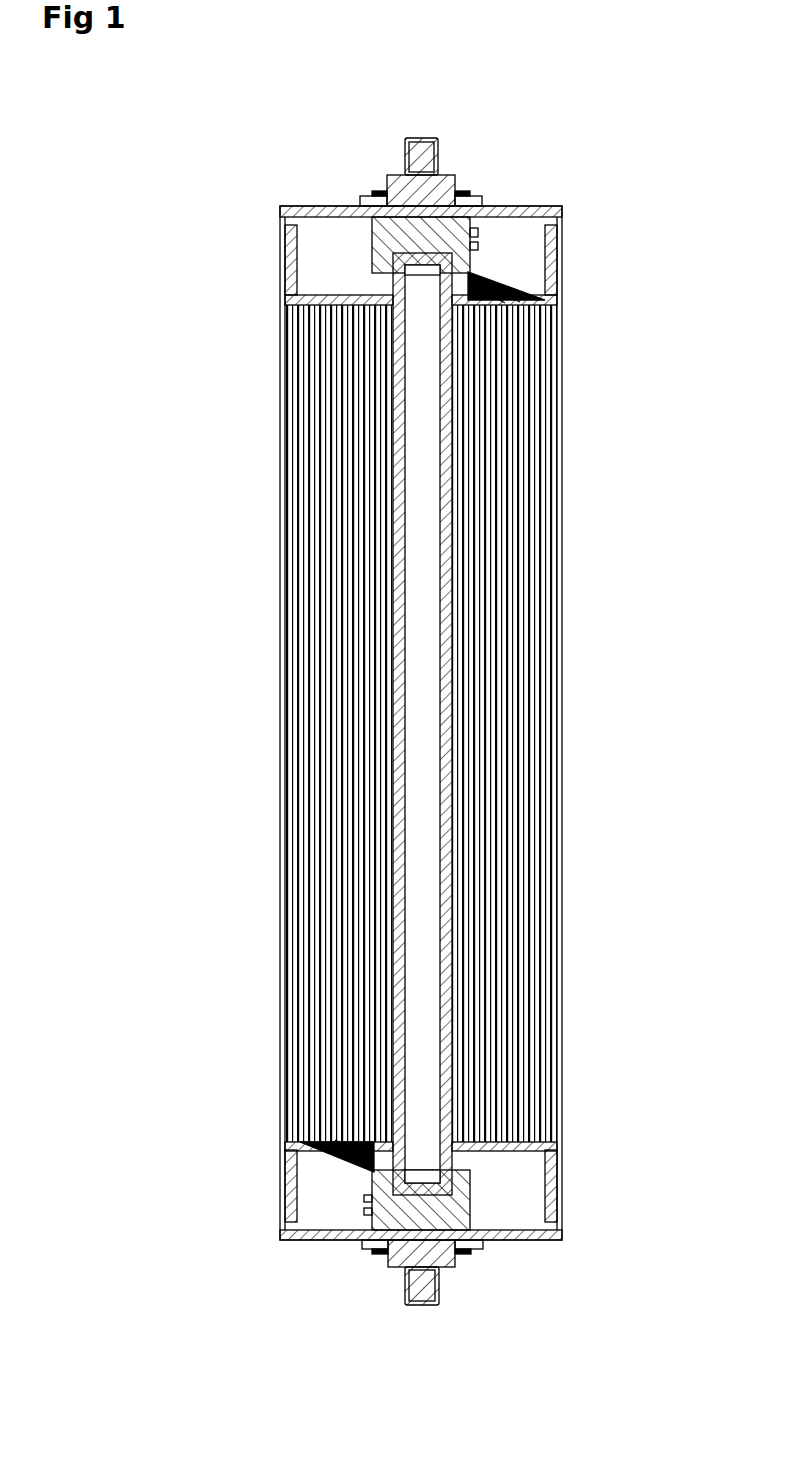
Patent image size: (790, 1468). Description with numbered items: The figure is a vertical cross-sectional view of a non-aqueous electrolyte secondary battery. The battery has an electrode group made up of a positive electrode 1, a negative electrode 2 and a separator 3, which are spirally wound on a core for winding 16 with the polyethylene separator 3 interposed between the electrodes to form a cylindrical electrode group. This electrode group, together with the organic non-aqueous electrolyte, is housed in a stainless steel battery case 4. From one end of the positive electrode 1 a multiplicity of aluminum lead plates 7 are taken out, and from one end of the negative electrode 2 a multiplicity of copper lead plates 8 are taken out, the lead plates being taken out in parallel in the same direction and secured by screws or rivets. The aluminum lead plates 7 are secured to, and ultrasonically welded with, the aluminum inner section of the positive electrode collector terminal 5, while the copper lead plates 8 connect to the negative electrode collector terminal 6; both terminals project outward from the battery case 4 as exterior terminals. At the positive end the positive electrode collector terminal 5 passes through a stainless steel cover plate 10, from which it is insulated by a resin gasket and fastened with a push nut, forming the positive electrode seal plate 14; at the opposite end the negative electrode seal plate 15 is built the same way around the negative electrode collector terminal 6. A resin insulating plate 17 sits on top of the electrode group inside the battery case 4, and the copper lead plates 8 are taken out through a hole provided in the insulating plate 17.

The positive electrode 1 is at (405, 714).
The negative electrode 2 is at (286, 1030).
The separator 3 is at (310, 932).
The battery case 4 is at (563, 686).
The positive electrode collector terminal 5 is at (458, 186).
The negative electrode collector terminal 6 is at (398, 1262).
The aluminum lead plates 7 is at (471, 272).
The copper lead plates 8 is at (373, 1183).
The cover plate 10 is at (562, 210).
The positive electrode seal plate 14 is at (357, 203).
The negative electrode seal plate 15 is at (488, 1243).
The core for winding 16 is at (368, 295).
The insulating plate 17 is at (549, 262).